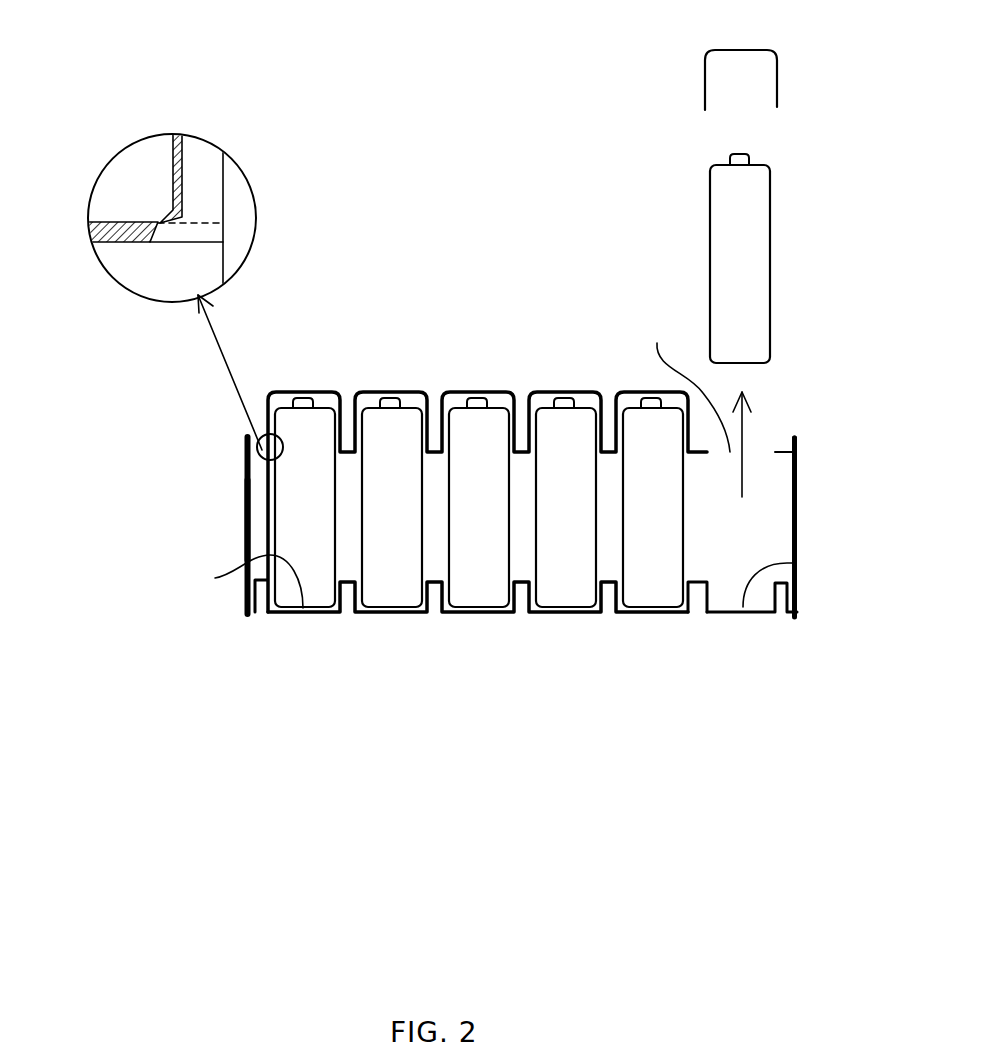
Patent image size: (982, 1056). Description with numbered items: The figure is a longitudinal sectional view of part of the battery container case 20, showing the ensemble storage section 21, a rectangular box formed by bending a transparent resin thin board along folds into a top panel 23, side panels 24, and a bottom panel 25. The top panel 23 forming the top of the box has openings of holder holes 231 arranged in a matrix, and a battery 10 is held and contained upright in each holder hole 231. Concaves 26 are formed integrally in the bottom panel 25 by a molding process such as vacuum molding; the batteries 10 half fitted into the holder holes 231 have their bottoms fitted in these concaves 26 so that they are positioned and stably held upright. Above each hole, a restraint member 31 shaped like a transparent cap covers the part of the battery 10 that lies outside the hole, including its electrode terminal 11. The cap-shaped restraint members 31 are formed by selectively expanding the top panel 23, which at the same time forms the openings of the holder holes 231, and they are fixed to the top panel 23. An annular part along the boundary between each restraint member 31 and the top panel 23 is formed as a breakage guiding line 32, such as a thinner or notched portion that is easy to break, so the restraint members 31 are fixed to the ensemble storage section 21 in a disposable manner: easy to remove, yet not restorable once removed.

The battery 10 is at (237, 255).
The electrode terminal 11 is at (563, 272).
The battery container case 20 is at (528, 694).
The ensemble storage section 21 is at (573, 527).
The top panel 23 is at (439, 303).
The side panel 24 is at (523, 520).
The bottom panel 25 is at (697, 632).
The concave 26 is at (215, 578).
The restraint member 31 is at (510, 331).
The breakage guiding line 32 is at (703, 112).
The holder hole 231 is at (418, 373).